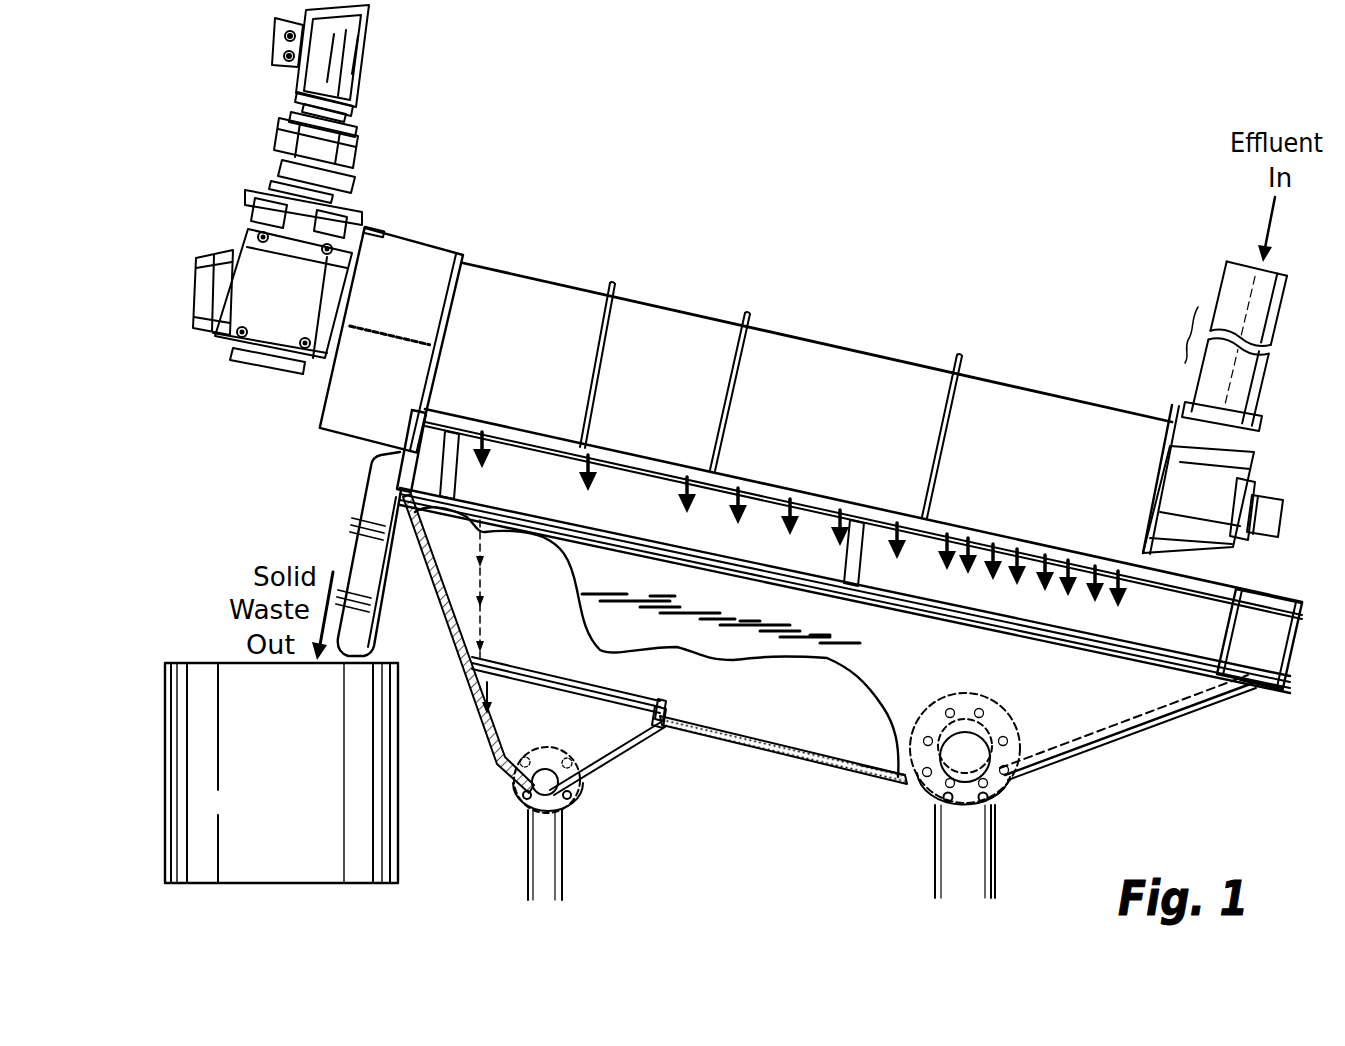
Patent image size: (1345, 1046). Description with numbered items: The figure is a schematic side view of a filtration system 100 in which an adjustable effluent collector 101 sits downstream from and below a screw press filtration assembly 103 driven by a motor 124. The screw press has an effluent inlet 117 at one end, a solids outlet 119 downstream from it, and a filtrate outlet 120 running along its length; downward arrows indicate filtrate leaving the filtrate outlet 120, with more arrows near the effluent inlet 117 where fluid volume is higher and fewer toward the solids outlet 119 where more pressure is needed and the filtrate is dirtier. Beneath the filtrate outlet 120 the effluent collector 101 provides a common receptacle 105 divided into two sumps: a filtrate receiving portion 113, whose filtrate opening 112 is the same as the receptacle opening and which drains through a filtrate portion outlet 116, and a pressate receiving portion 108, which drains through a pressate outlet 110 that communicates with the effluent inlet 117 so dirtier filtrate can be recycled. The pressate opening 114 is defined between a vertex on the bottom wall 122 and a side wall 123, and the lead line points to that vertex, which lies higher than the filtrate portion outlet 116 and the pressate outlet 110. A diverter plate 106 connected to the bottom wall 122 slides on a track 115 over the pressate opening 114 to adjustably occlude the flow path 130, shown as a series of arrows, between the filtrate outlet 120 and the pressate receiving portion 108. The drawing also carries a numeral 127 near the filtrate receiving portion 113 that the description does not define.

The filtration system 100 is at (984, 130).
The adjustable effluent collector 101 is at (1203, 622).
The screw press filtration assembly 103 is at (847, 342).
The common receptacle 105 is at (441, 603).
The diverter plate 106 is at (700, 724).
The pressate receiving portion 108 is at (610, 775).
The pressate outlet 110 is at (546, 780).
The filtrate opening 112 is at (1250, 688).
The filtrate receiving portion 113 is at (1098, 762).
The pressate opening 114 is at (659, 725).
The track 115 is at (621, 693).
The filtrate portion outlet 116 is at (965, 755).
The effluent inlet 117 is at (1204, 438).
The solids outlet 119 is at (362, 457).
The filtrate outlet 120 is at (667, 463).
The bottom wall 122 is at (868, 780).
The side wall 123 is at (468, 668).
The motor 124 is at (251, 154).
The seal line 127 is at (1182, 710).
The flow path 130 is at (484, 600).